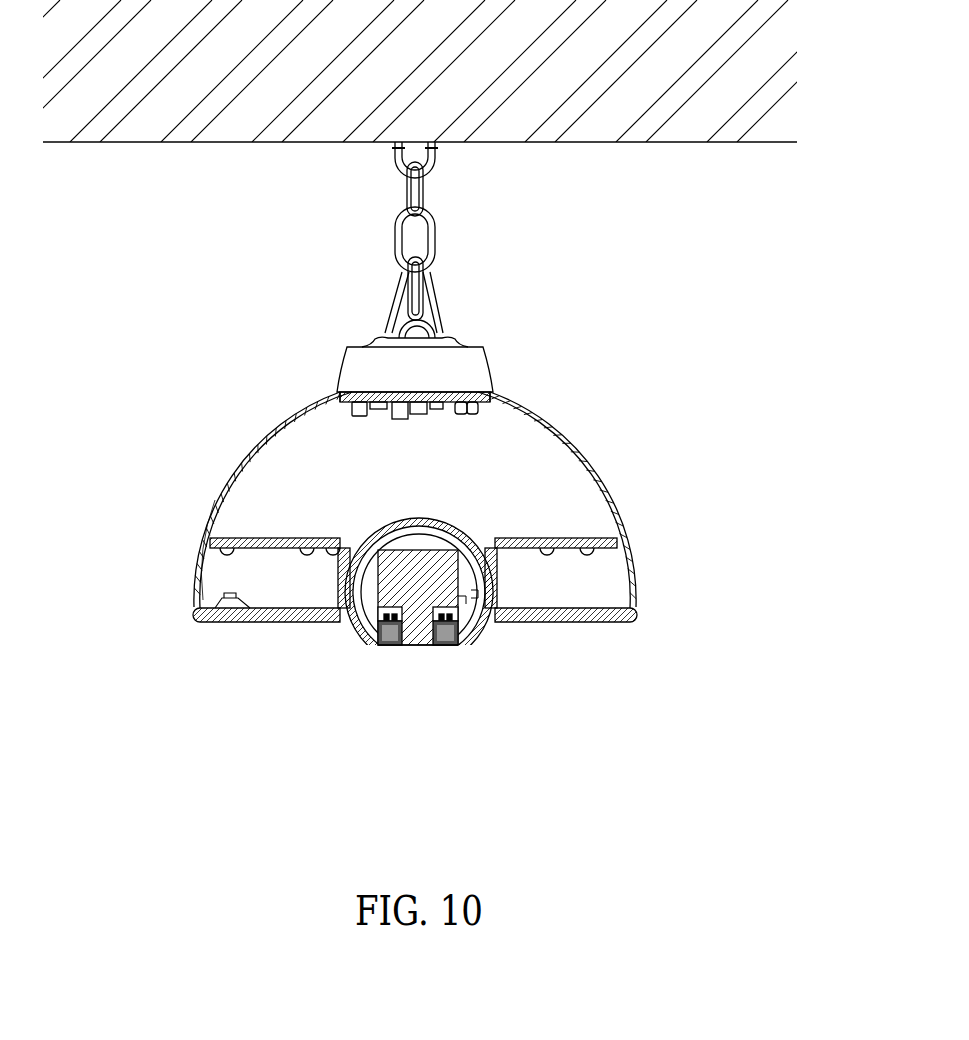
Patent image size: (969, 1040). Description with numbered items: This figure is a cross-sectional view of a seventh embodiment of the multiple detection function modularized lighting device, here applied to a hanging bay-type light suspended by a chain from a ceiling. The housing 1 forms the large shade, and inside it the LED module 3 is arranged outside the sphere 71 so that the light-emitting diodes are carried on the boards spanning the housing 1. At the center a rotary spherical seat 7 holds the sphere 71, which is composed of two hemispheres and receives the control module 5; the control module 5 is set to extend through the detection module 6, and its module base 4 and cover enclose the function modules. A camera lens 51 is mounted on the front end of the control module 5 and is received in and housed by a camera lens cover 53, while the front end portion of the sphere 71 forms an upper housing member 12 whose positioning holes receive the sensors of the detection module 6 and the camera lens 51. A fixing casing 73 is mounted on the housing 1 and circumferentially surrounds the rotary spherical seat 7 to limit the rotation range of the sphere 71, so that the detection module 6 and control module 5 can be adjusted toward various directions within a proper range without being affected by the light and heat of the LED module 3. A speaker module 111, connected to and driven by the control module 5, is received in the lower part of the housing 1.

The housing 1 is at (578, 432).
The LED module 3 is at (221, 557).
The module base 4 is at (340, 540).
The control module 5 is at (462, 602).
The detection module 6 is at (376, 648).
The rotary spherical seat 7 is at (490, 541).
The upper housing member 12 is at (360, 630).
The camera lens 51 is at (413, 646).
The camera lens cover 53 is at (432, 646).
The sphere 71 is at (496, 584).
The fixing casing 73 is at (476, 596).
The speaker module 111 is at (221, 611).